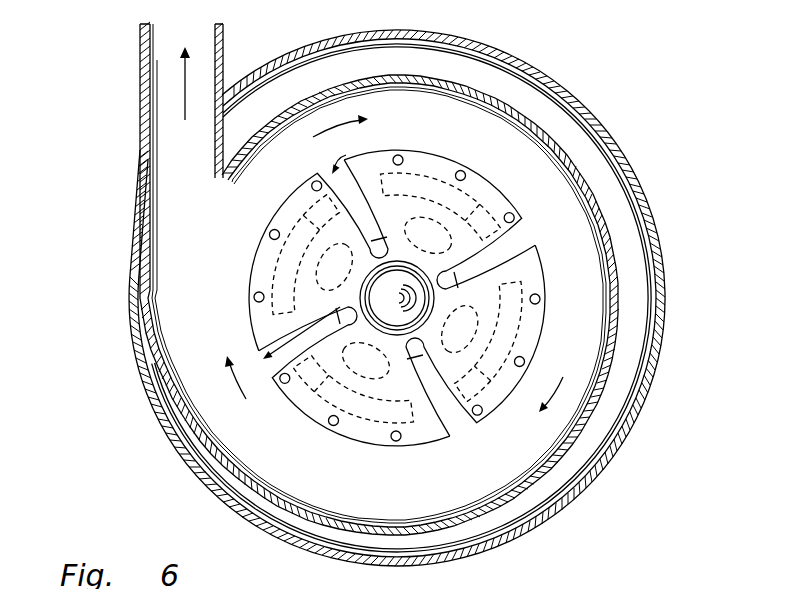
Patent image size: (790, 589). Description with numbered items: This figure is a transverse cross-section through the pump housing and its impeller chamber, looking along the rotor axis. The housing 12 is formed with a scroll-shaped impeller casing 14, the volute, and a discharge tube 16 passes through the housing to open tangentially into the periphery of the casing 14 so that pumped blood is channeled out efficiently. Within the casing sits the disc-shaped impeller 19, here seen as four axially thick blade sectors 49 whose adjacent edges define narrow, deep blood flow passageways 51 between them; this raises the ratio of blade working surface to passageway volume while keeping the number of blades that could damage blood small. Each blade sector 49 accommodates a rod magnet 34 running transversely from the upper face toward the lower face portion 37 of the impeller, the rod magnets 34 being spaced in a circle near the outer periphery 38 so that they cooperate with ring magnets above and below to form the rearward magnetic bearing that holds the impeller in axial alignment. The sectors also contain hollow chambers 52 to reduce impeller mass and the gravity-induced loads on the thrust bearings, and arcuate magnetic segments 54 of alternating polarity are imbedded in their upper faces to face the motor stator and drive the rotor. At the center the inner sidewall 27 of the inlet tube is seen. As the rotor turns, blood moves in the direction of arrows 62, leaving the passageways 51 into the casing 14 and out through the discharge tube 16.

The housing 12 is at (668, 224).
The impeller casing 14 is at (607, 368).
The discharge tube 16 is at (140, 74).
The impeller 19 is at (543, 204).
The inner sidewall 27 is at (522, 243).
The rod magnets 34 is at (400, 154).
The lower face portion 37 is at (290, 212).
The outer periphery 38 is at (512, 211).
The blade sectors 49 is at (489, 172).
The passageway 51 is at (448, 422).
The hollow chambers 52 is at (531, 268).
The arcuate magnetic segments 54 is at (432, 168).
The arrows 62 is at (186, 120).